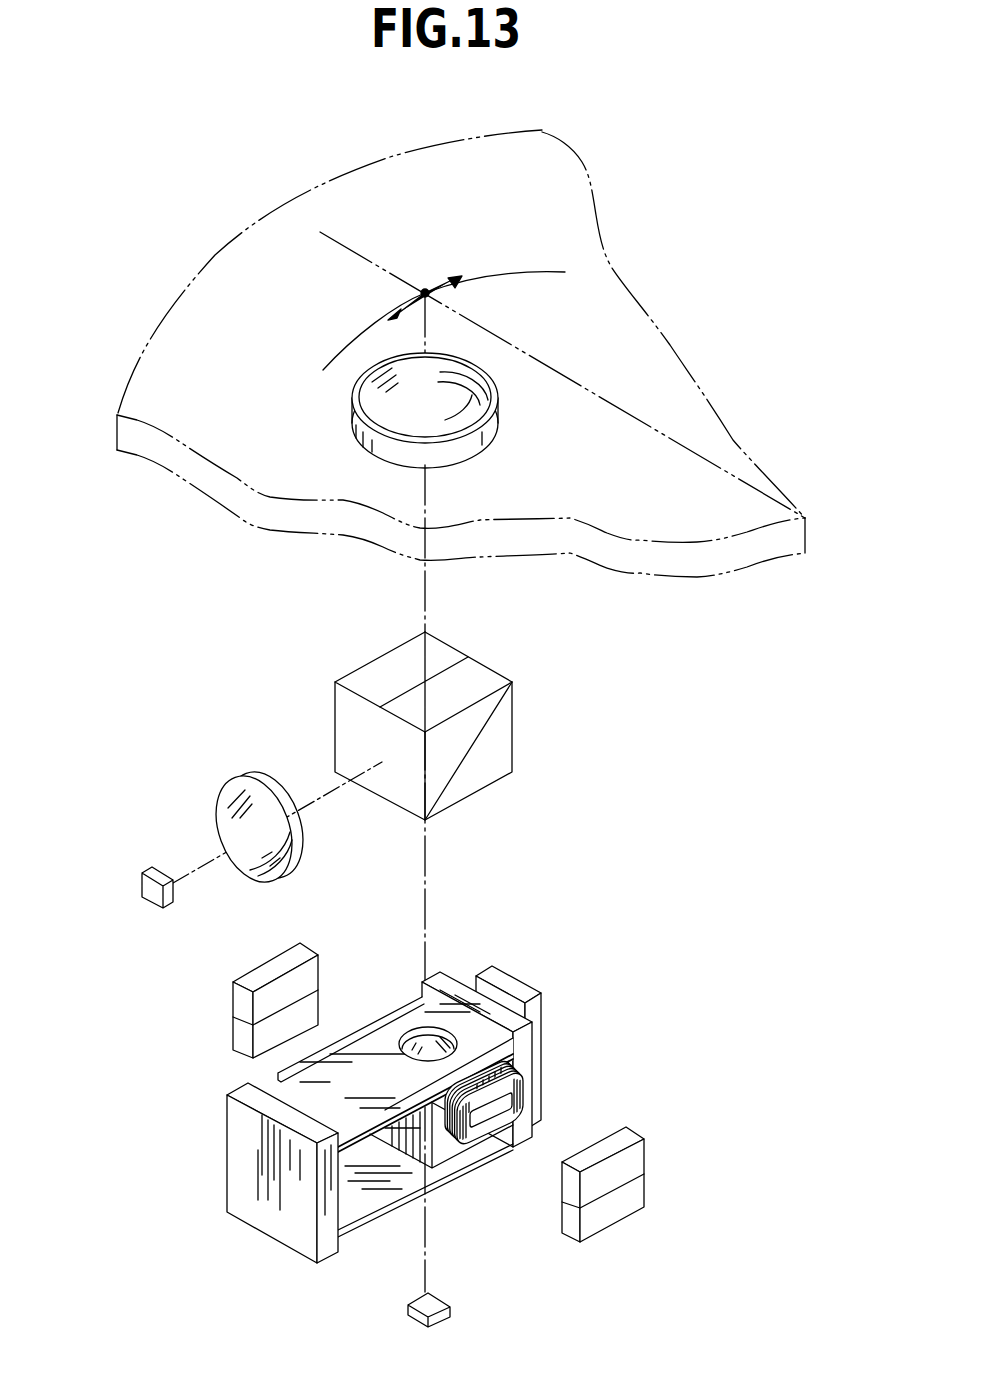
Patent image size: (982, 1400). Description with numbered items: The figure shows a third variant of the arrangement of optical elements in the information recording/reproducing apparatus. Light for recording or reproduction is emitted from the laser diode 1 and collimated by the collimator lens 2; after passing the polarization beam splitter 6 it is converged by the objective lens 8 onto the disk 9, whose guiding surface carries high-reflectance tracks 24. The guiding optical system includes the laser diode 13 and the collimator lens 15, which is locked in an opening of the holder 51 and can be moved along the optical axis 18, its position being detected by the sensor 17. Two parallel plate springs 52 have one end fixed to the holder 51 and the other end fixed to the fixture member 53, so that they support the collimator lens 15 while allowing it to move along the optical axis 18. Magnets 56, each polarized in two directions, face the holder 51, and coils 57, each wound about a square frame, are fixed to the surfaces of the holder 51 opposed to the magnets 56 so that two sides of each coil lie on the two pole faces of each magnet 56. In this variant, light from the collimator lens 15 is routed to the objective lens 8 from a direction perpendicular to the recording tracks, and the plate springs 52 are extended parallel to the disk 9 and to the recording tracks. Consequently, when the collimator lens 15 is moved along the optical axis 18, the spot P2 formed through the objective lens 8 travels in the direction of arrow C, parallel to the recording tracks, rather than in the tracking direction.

The laser diode 1 is at (158, 868).
The collimator lens 2 is at (247, 775).
The polarization beam splitter 6 is at (500, 730).
The objective lens 8 is at (493, 445).
The disk 9 is at (202, 317).
The laser diode 13 is at (437, 1300).
The collimator lens 15 is at (413, 1033).
The sensor 17 is at (507, 1018).
The optical axis 18 is at (428, 862).
The tracks 24 is at (544, 276).
The holder 51 is at (527, 1043).
The plate springs 52 is at (283, 1086).
The fixture member 53 is at (287, 1222).
The magnets 56 is at (302, 953).
The coils 57 is at (513, 1097).
The spot of guiding light P2 is at (424, 290).
The arrow C is at (458, 276).